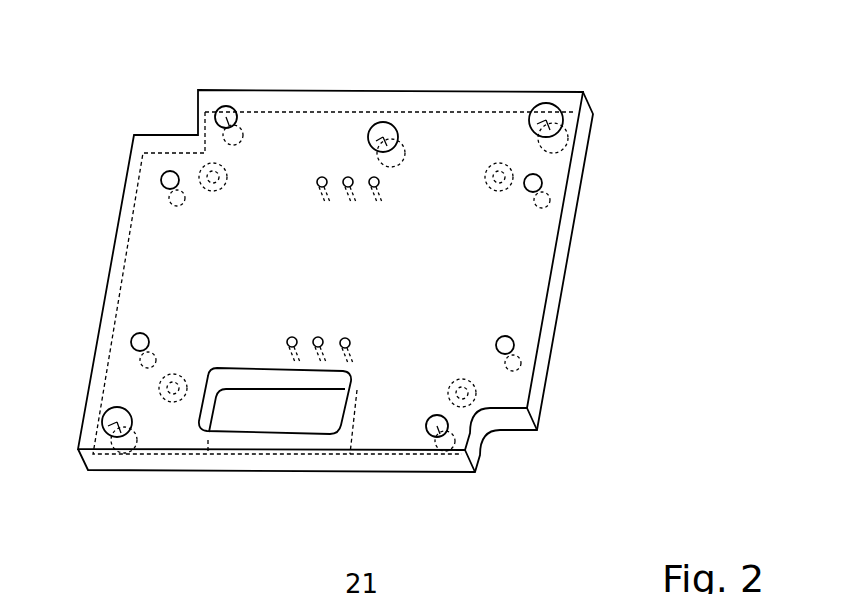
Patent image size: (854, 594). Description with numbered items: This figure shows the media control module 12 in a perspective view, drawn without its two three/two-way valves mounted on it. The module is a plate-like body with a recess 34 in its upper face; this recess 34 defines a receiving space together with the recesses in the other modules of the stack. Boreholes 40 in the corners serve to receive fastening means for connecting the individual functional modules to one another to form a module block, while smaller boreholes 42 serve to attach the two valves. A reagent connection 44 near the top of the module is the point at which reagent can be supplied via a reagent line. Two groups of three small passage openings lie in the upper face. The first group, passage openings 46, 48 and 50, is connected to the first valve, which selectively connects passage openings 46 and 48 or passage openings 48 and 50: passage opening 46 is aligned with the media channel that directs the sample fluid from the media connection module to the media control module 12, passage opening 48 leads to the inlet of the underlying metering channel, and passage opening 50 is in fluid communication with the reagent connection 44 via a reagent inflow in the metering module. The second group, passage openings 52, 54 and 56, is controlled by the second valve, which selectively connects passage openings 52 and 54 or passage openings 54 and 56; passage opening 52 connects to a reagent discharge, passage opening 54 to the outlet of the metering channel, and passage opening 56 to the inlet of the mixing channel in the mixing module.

The media control module 12 is at (630, 230).
The recess 34 is at (295, 419).
The boreholes 40 is at (226, 108).
The boreholes 42 is at (165, 181).
The reagent connection 44 is at (385, 127).
The passage opening 46 is at (318, 187).
The passage opening 48 is at (346, 187).
The passage opening 50 is at (377, 187).
The passage opening 52 is at (290, 338).
The passage opening 54 is at (318, 338).
The passage opening 56 is at (349, 343).